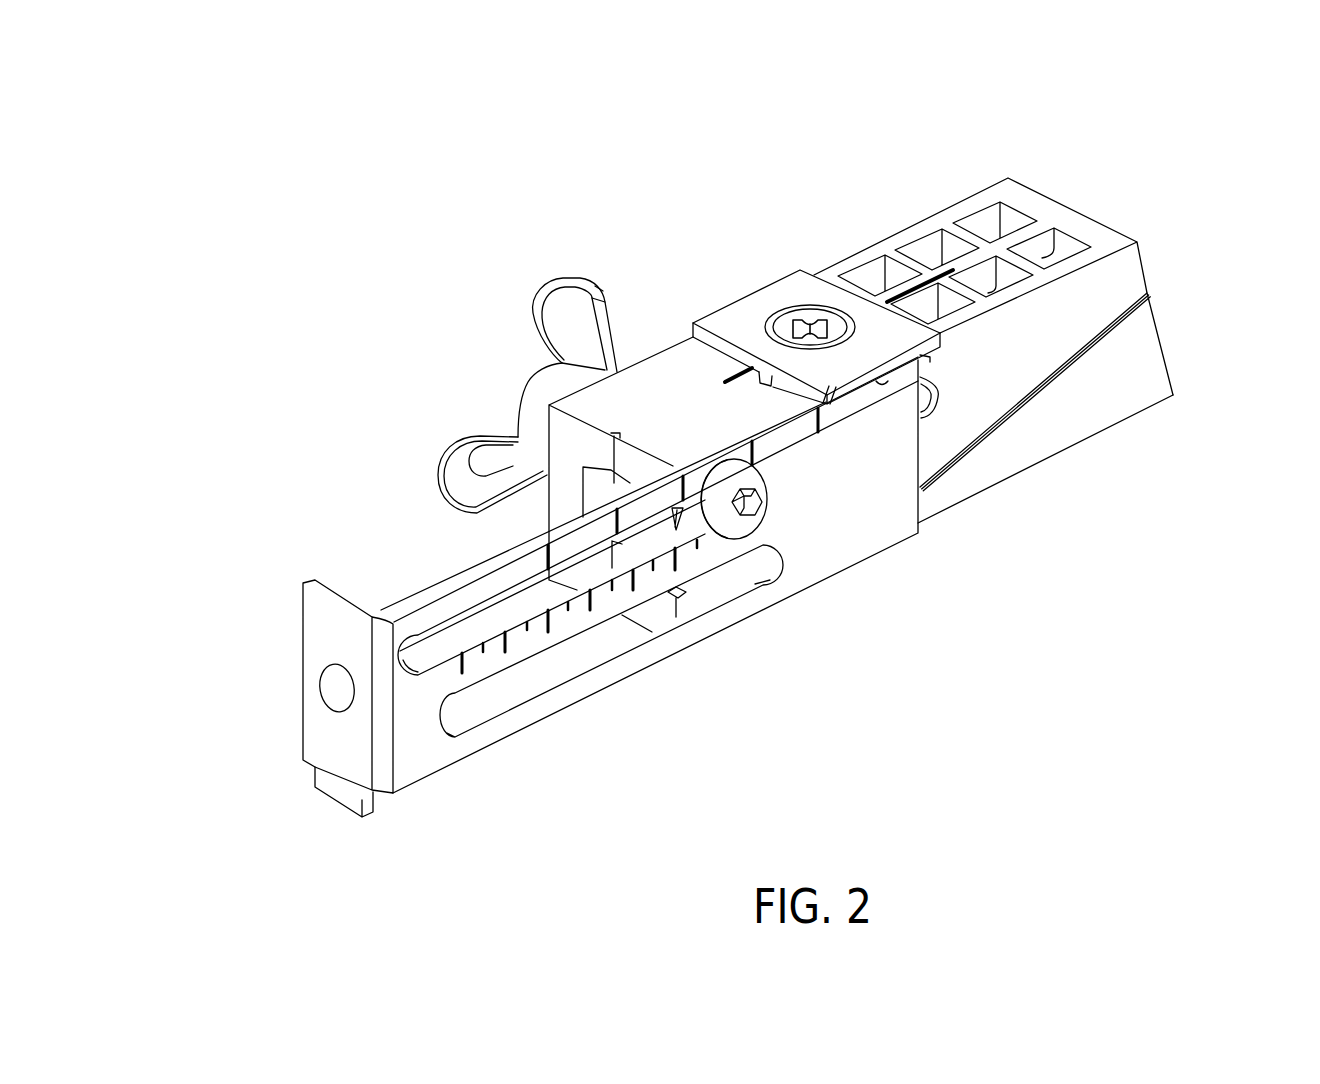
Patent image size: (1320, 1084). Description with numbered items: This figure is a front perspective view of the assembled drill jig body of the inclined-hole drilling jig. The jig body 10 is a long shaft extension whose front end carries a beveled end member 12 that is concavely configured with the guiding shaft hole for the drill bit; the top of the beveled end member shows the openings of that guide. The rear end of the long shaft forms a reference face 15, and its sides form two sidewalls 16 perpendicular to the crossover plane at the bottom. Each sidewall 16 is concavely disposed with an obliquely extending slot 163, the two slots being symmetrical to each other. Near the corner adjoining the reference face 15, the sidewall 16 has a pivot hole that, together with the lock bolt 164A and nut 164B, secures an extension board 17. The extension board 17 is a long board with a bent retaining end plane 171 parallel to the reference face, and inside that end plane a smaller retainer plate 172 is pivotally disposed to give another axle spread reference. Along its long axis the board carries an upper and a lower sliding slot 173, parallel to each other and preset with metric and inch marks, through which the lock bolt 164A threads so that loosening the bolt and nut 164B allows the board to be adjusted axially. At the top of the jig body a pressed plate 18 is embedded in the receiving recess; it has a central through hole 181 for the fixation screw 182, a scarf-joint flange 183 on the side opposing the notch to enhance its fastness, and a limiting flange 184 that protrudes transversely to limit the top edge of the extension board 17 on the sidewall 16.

The jig body 10 is at (948, 186).
The beveled end member 12 is at (1143, 262).
The reference face 15 is at (588, 448).
The sidewall 16 is at (1093, 408).
The extension board 17 is at (860, 492).
The pressed plate 18 is at (757, 300).
The obliquely extending slot 163 is at (948, 462).
The lock bolt 164A is at (758, 518).
The nut 164B is at (538, 392).
The retaining end plane 171 is at (325, 633).
The retainer plate 172 is at (342, 797).
The sliding slot 173 is at (707, 590).
The through hole 181 is at (850, 318).
The fixation screw 182 is at (808, 317).
The scarf-joint flange 183 is at (764, 375).
The limiting flange 184 is at (882, 373).